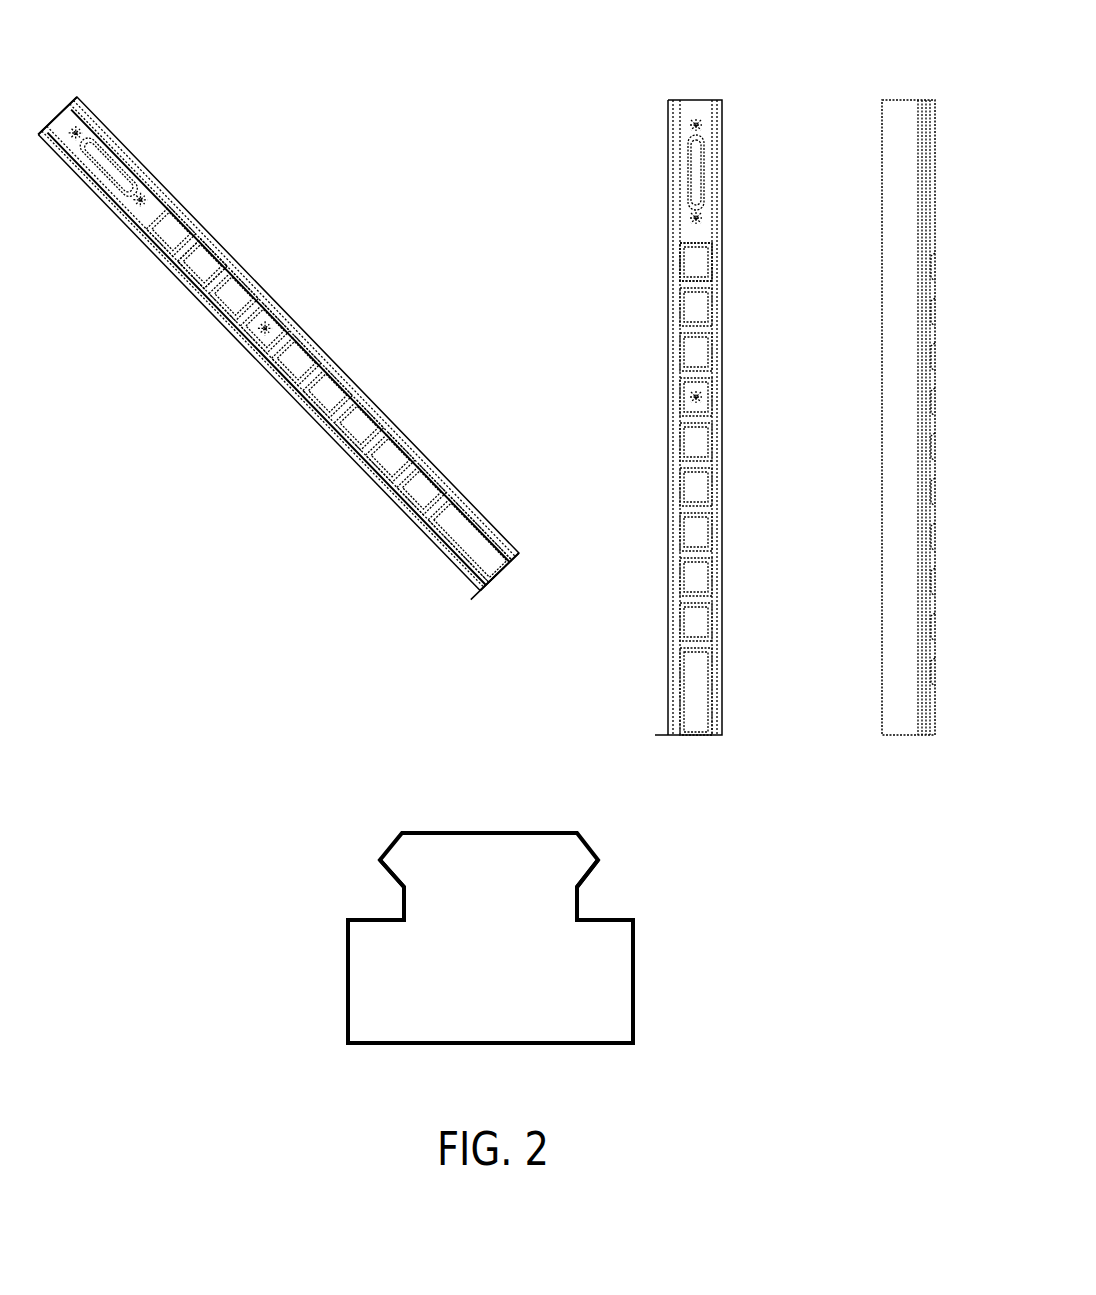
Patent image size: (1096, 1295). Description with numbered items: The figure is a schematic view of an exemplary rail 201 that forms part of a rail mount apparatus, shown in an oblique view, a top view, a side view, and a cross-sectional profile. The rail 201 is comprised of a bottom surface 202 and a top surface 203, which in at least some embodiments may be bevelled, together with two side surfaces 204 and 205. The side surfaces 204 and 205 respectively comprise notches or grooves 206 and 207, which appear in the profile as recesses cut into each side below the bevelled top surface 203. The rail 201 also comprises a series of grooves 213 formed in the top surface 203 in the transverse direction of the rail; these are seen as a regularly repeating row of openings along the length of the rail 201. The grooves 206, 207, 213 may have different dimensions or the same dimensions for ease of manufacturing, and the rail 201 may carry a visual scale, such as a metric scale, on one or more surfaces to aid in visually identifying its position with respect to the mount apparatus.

The rail 201 is at (220, 362).
The bottom surface 202 is at (613, 1046).
The top surface 203 is at (537, 828).
The side surface 204 is at (348, 1018).
The side surface 205 is at (634, 1000).
The notch or groove 206 is at (402, 912).
The notch or groove 207 is at (578, 905).
The grooves 213 is at (305, 325).